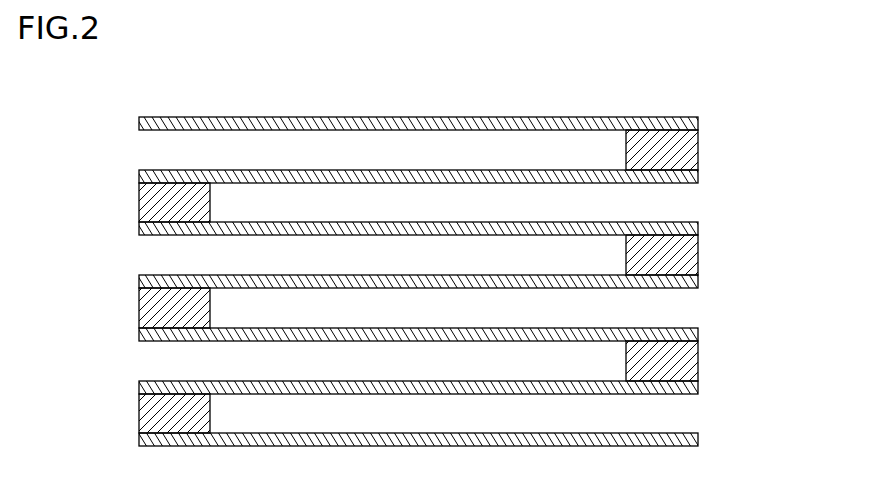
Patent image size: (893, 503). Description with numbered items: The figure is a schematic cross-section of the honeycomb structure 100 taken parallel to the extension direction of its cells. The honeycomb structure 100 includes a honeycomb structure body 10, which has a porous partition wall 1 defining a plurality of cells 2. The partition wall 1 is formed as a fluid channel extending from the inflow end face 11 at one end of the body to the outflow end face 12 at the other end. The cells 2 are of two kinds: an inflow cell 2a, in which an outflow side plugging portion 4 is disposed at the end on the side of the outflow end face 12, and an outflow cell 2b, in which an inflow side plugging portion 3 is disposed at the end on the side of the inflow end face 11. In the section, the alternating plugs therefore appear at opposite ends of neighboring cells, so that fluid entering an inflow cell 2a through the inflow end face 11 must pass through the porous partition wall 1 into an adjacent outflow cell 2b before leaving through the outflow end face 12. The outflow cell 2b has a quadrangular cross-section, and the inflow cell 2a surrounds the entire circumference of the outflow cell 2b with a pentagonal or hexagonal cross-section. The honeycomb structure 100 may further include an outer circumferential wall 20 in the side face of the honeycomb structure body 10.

The partition wall 1 is at (313, 170).
The cell 2 is at (421, 281).
The inflow cell 2a is at (148, 256).
The outflow cell 2b is at (652, 306).
The inflow side plugging portion 3 is at (146, 314).
The outflow side plugging portion 4 is at (688, 250).
The honeycomb structure body 10 is at (432, 114).
The inflow end face 11 is at (140, 122).
The outflow end face 12 is at (700, 120).
The outer circumferential wall 20 is at (445, 447).
The honeycomb structure 100 is at (670, 78).